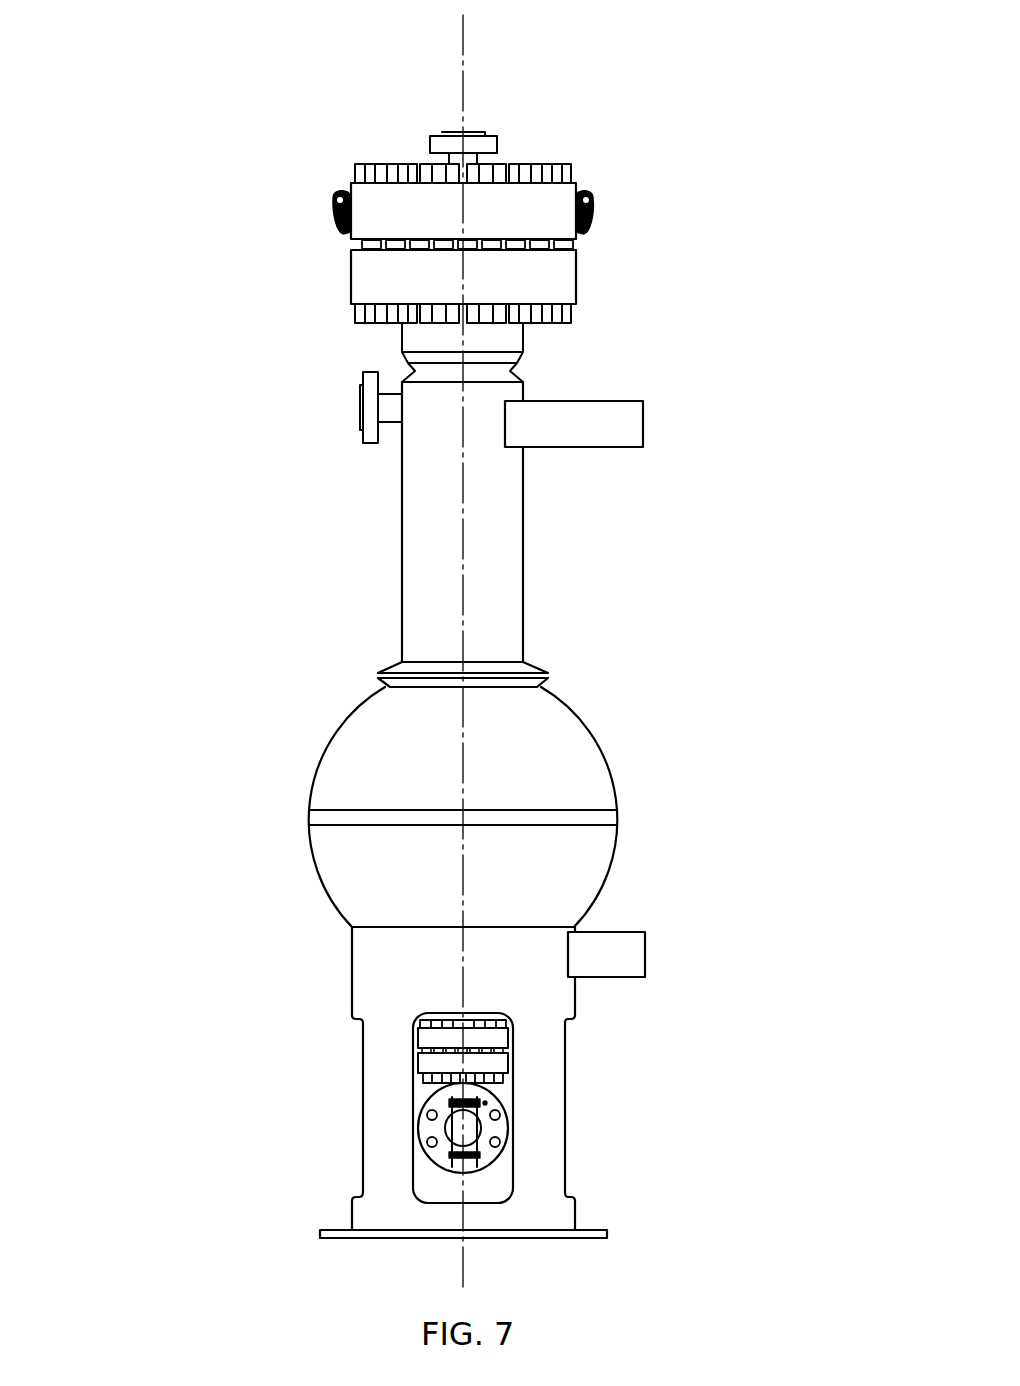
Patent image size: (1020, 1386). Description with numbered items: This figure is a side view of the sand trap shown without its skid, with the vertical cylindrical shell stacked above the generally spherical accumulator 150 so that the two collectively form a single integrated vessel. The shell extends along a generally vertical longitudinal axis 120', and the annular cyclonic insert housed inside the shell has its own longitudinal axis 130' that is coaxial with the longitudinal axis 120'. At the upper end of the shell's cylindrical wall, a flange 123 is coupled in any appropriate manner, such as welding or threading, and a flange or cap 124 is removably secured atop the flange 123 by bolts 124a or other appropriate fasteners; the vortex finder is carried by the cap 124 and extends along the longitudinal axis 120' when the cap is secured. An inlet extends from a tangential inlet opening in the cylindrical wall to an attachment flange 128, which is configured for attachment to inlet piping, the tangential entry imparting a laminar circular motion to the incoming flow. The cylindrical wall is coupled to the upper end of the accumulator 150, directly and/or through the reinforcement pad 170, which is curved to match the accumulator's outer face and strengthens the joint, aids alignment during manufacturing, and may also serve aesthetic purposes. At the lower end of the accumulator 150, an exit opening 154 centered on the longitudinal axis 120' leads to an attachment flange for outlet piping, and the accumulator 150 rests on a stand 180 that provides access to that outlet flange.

The longitudinal axis 120' is at (673, 652).
The flange 123 is at (372, 275).
The flange (cap) 124 is at (373, 213).
The bolts 124a is at (402, 170).
The attachment flange 128 is at (362, 425).
The longitudinal axis 130' is at (385, 522).
The accumulator 150 is at (387, 868).
The exit opening 154 is at (447, 1030).
The reinforcement pad 170 is at (397, 688).
The stand 180 is at (392, 977).